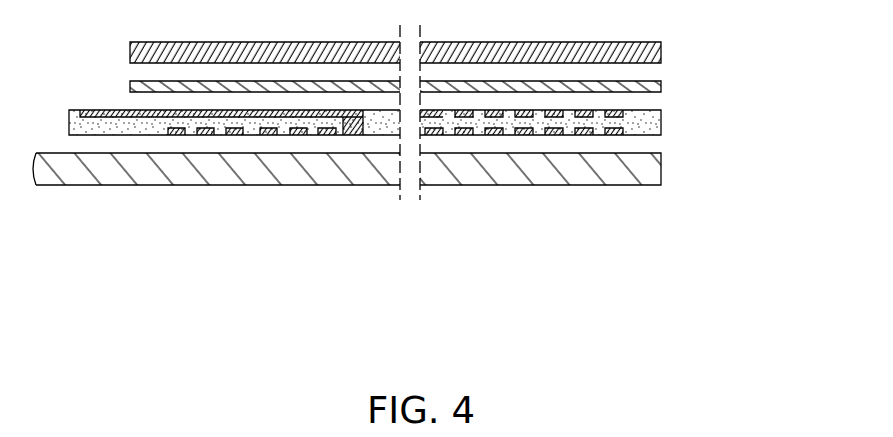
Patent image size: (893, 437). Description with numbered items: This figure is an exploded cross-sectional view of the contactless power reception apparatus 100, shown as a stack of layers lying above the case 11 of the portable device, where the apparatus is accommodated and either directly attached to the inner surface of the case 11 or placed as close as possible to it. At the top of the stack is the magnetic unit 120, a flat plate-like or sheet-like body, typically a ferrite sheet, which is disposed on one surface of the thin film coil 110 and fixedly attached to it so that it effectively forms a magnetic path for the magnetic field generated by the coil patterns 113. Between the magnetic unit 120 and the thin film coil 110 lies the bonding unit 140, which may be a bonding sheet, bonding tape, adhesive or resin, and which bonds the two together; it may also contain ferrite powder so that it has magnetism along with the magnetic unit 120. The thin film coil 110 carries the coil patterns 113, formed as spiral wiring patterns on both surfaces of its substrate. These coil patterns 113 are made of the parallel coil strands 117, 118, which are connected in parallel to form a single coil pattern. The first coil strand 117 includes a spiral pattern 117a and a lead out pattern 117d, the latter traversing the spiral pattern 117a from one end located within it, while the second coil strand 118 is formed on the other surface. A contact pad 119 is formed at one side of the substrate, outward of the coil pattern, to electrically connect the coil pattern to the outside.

The case 11 is at (661, 172).
The contactless power reception apparatus 100 is at (753, 48).
The thin film coil 110 is at (400, 169).
The coil patterns 113 is at (550, 304).
The first coil strand 117 is at (468, 261).
The spiral pattern 117a is at (437, 122).
The lead out pattern 117d is at (347, 120).
The coil strand 118 is at (260, 127).
The contact pad 119 is at (96, 114).
The magnetic unit 120 is at (663, 53).
The bonding unit 140 is at (663, 87).